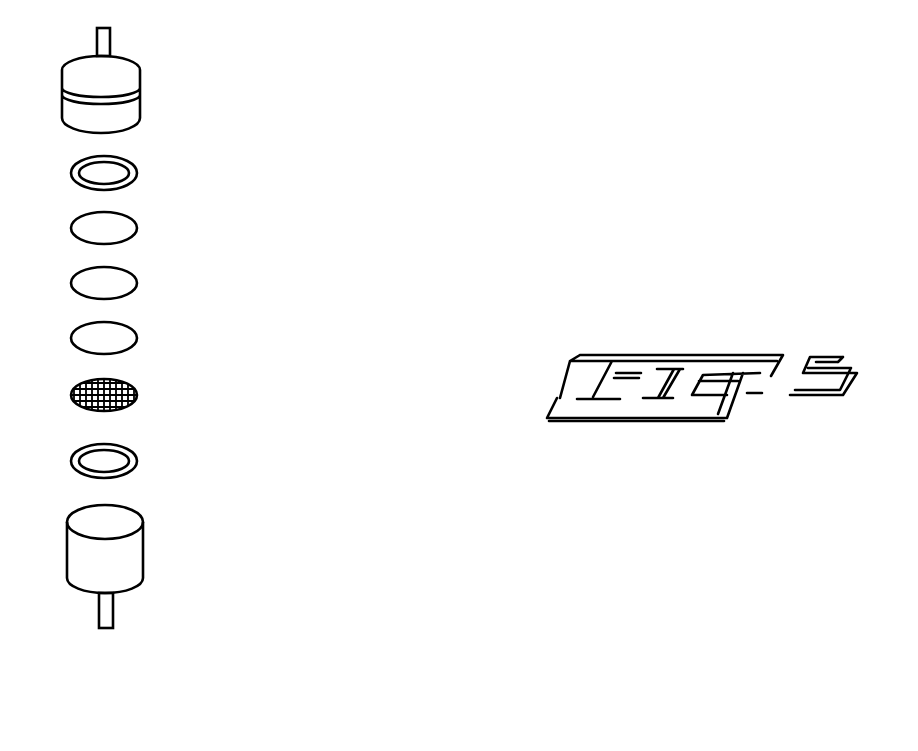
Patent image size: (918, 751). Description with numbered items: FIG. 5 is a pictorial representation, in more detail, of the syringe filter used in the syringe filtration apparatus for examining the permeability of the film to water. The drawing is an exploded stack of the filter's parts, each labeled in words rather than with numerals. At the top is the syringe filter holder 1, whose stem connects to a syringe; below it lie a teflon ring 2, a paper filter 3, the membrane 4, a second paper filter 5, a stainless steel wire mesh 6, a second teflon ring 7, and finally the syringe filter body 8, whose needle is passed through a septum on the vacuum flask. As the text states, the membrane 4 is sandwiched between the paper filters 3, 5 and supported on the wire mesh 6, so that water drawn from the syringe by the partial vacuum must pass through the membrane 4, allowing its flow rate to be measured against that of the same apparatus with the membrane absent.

The syringe filter holder 1 is at (103, 22).
The teflon ring (upper) 2 is at (145, 173).
The paper filter (upper) 3 is at (145, 228).
The membrane 4 is at (147, 283).
The paper filter (lower) 5 is at (147, 338).
The wire mesh 6 is at (145, 395).
The teflon ring (lower) 7 is at (145, 461).
The syringe filter 8 is at (150, 551).